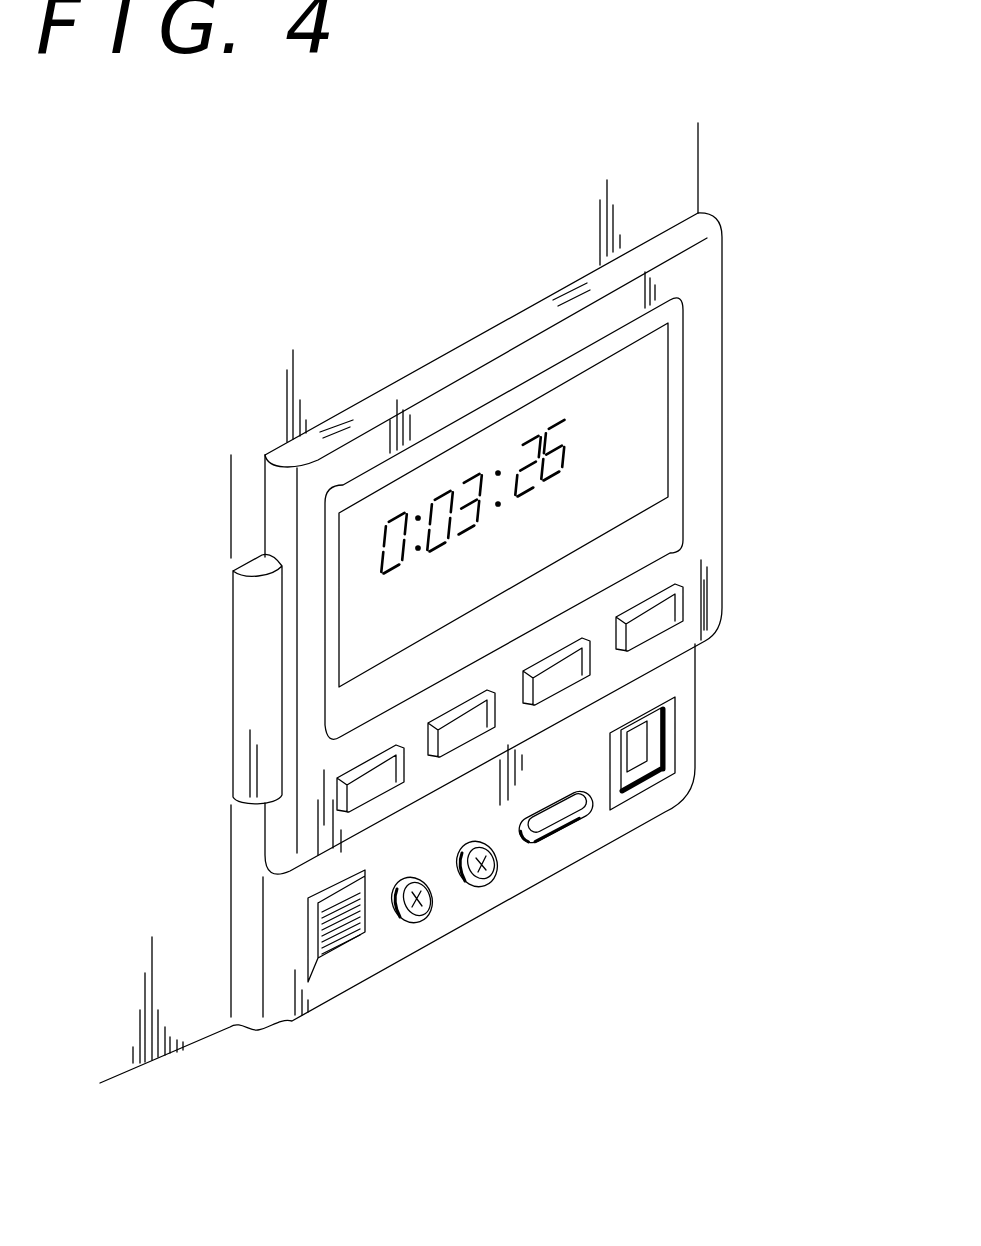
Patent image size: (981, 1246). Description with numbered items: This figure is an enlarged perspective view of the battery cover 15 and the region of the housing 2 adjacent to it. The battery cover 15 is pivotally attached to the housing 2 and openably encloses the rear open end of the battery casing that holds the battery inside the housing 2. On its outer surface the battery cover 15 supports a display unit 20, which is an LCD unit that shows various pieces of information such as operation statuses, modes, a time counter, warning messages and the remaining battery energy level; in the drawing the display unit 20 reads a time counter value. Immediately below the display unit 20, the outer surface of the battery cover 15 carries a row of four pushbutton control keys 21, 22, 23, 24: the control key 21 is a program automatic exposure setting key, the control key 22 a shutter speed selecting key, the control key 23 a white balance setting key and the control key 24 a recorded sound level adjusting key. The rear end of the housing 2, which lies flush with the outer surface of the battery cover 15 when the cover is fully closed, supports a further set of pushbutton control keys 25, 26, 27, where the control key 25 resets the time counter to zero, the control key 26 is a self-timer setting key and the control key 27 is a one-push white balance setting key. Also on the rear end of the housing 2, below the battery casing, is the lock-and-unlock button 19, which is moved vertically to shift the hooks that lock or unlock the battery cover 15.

The housing 2 is at (304, 1019).
The battery cover 15 is at (460, 393).
The lock-and-unlock button 19 is at (338, 927).
The display unit 20 is at (630, 402).
The control key 21 is at (353, 767).
The control key 22 is at (463, 700).
The control key 23 is at (550, 663).
The control key 24 is at (667, 618).
The control key 25 is at (430, 903).
The control key 26 is at (497, 868).
The control key 27 is at (566, 822).